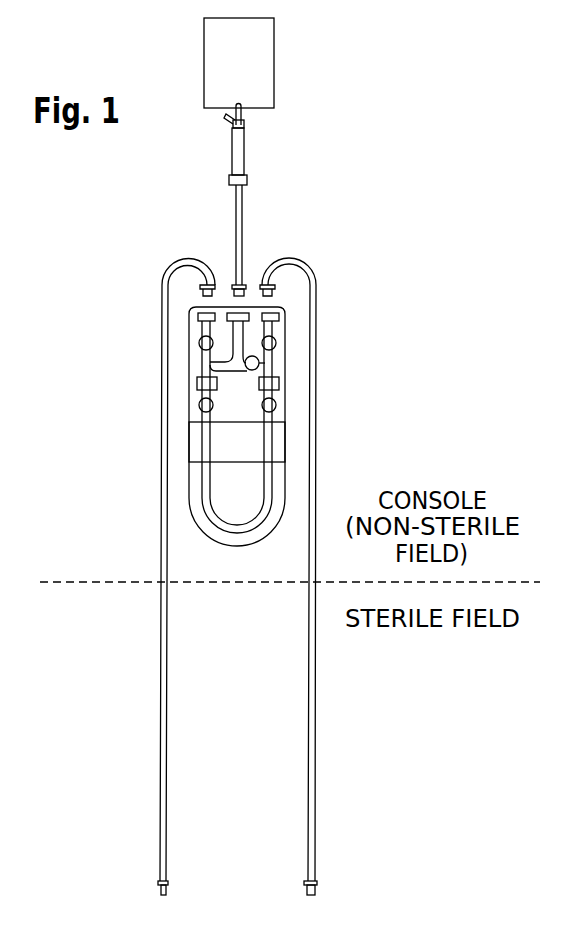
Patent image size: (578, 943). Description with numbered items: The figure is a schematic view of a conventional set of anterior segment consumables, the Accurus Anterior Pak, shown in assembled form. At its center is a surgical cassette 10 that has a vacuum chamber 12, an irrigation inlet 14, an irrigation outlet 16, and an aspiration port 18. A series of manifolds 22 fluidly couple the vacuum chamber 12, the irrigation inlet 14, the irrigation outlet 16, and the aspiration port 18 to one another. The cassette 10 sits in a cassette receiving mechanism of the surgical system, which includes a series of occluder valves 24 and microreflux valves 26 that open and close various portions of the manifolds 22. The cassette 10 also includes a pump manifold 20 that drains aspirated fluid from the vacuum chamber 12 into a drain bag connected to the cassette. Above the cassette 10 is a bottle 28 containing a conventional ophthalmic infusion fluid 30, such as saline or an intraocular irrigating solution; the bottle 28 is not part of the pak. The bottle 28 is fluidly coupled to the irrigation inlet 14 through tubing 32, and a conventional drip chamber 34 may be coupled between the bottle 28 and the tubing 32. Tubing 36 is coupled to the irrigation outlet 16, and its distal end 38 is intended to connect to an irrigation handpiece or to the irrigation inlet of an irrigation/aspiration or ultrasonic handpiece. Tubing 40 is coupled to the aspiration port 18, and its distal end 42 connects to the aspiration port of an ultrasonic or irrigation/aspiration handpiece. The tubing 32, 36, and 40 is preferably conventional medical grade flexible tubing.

The surgical cassette 10 is at (225, 306).
The vacuum chamber 12 is at (250, 453).
The irrigation inlet 14 is at (240, 312).
The irrigation outlet 16 is at (197, 317).
The aspiration port 18 is at (279, 315).
The pump manifold 20 is at (237, 534).
The manifolds 22 is at (273, 363).
The occluder valves 24 is at (199, 405).
The microreflux valves 26 is at (197, 383).
The bottle 28 is at (274, 65).
The ophthalmic infusion fluid 30 is at (244, 68).
The tubing 32 is at (242, 210).
The drip chamber 34 is at (247, 152).
The tubing 36 is at (160, 553).
The distal end 38 is at (160, 888).
The tubing 40 is at (317, 472).
The distal end 42 is at (318, 888).